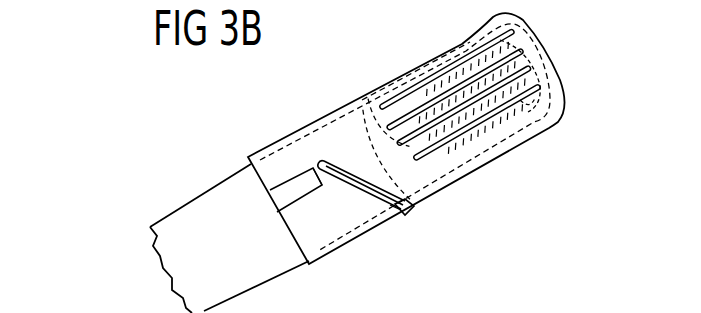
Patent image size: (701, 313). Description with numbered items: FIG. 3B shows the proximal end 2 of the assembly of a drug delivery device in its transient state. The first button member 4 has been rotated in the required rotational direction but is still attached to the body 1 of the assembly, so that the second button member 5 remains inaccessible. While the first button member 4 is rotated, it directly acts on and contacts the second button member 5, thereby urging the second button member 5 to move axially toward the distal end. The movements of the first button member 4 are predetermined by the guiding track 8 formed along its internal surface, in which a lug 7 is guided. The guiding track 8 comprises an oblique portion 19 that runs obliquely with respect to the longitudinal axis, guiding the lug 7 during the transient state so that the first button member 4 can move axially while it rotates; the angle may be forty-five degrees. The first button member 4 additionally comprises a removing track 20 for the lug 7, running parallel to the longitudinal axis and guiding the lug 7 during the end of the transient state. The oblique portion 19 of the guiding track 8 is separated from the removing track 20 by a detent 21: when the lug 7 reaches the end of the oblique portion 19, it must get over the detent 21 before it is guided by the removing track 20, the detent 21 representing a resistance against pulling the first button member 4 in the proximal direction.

The body 1 is at (198, 218).
The proximal end 2 is at (562, 57).
The first button member 4 is at (567, 111).
The second button member 5 is at (478, 108).
The lug 7 is at (403, 212).
The guiding track 8 is at (358, 182).
The oblique portion 19 is at (385, 211).
The removing track 20 is at (273, 206).
The detent 21 is at (316, 177).